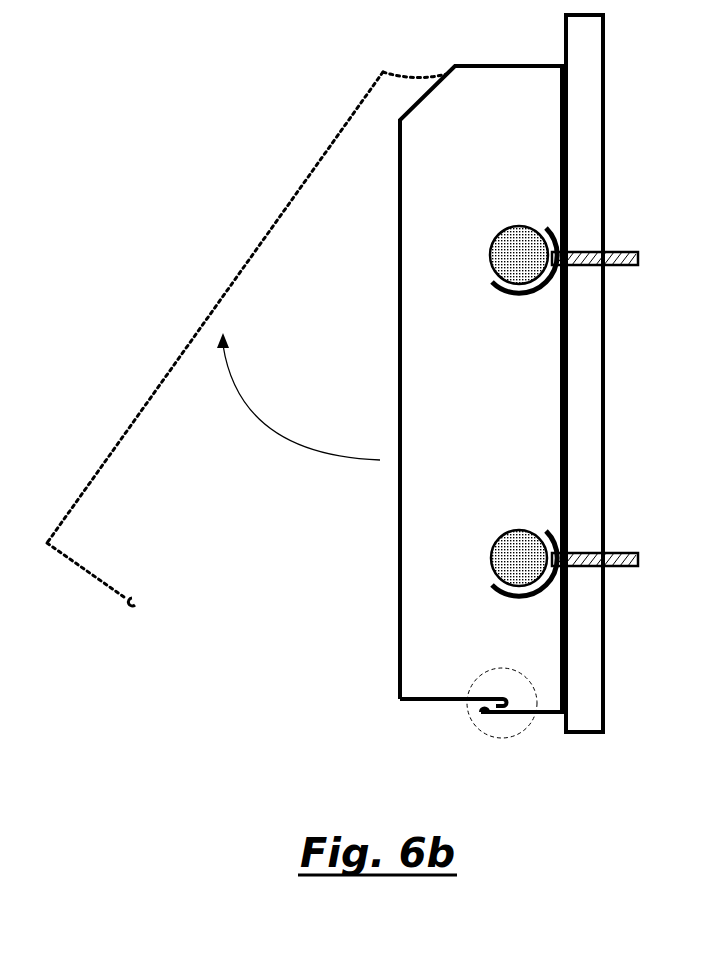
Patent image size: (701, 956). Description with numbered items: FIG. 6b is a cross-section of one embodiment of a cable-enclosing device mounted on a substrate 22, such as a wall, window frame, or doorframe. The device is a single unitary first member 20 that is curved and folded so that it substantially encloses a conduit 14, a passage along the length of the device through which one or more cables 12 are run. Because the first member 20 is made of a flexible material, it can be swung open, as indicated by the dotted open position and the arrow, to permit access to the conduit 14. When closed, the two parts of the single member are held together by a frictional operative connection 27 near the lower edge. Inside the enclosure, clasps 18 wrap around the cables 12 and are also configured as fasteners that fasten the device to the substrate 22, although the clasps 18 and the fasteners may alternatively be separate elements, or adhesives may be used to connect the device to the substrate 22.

The cables 12 is at (532, 267).
The conduit 14 is at (502, 452).
The clasps 18 is at (537, 290).
The first member 20 is at (397, 519).
The substrate 22 is at (583, 163).
The frictional operative connection 27 is at (470, 722).